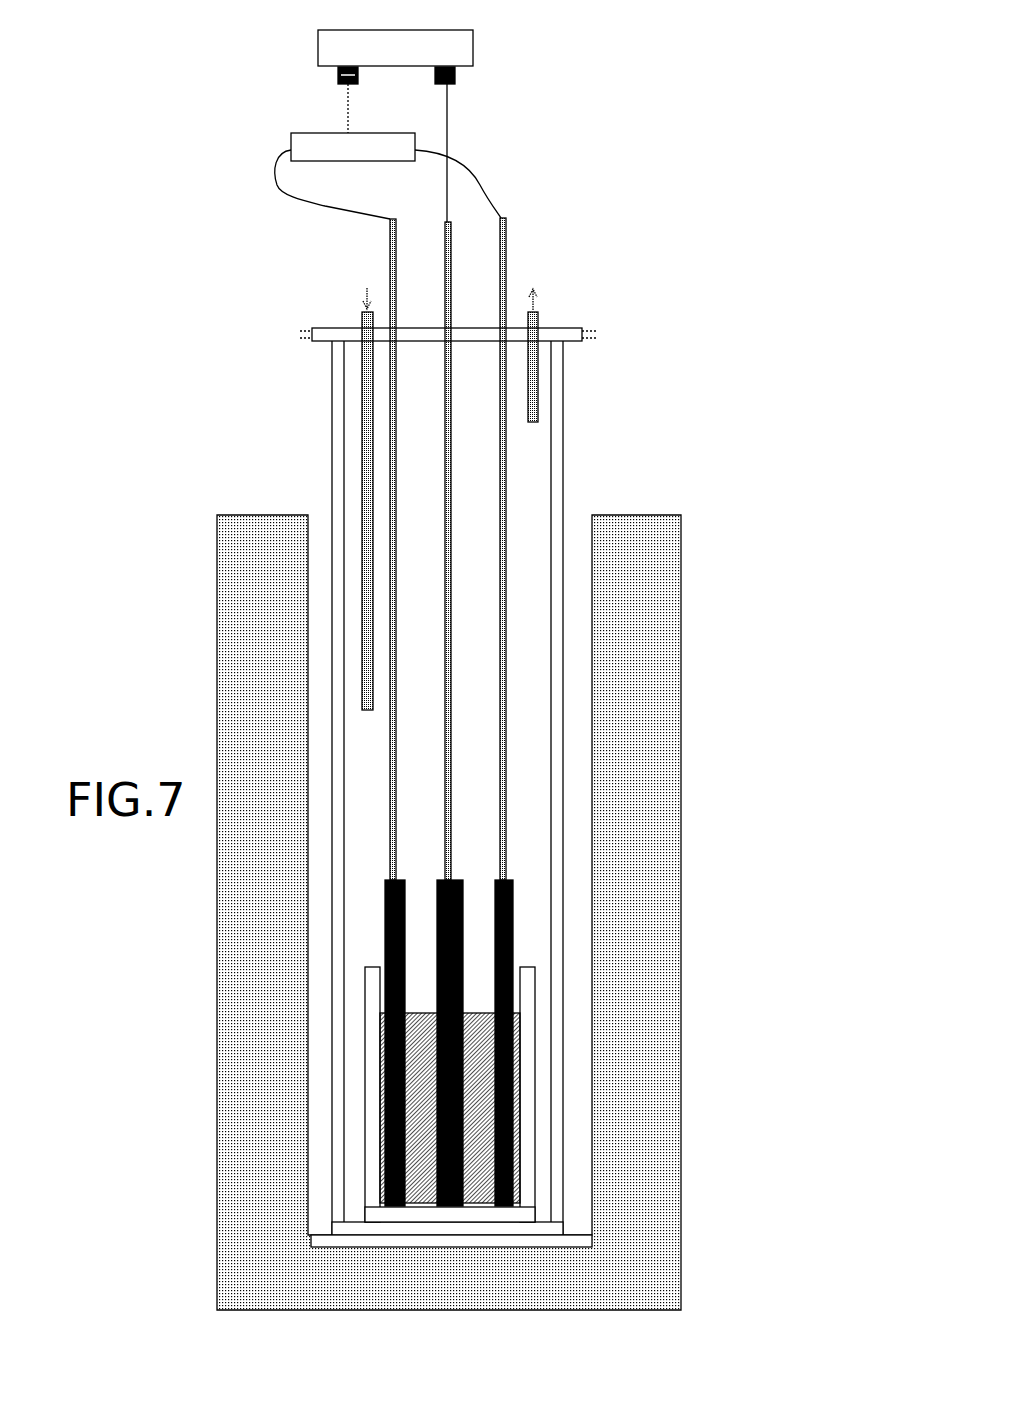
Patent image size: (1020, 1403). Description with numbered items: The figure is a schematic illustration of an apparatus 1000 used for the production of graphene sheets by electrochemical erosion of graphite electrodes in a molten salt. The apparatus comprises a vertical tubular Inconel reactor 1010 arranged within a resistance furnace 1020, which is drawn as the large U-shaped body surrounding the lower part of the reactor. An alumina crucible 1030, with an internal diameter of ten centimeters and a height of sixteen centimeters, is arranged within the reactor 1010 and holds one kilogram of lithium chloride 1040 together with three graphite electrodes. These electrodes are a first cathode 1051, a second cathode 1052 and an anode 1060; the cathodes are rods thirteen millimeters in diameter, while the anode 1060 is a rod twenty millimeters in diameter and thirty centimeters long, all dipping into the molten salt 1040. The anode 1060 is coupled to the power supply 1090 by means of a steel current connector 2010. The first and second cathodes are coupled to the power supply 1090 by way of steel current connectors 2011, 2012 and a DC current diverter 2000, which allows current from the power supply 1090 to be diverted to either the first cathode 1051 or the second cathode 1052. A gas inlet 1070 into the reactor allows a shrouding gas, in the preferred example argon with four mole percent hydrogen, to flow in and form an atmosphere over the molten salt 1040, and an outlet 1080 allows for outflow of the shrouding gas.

The apparatus 1000 is at (738, 248).
The vertical tubular Inconel reactor 1010 is at (563, 452).
The resistance furnace 1020 is at (682, 676).
The alumina crucible 1030 is at (526, 965).
The lithium chloride 1040 is at (467, 1010).
The first cathode 1051 is at (405, 880).
The second cathode 1052 is at (513, 880).
The anode 1060 is at (463, 880).
The gas inlet tube 1070 is at (362, 284).
The outlet 1080 is at (533, 271).
The power supply 1090 is at (415, 28).
The DC current diverter 2000 is at (303, 131).
The steel current connector 2010 is at (452, 290).
The steel current connector 2011 is at (397, 290).
The steel current connector 2012 is at (507, 222).